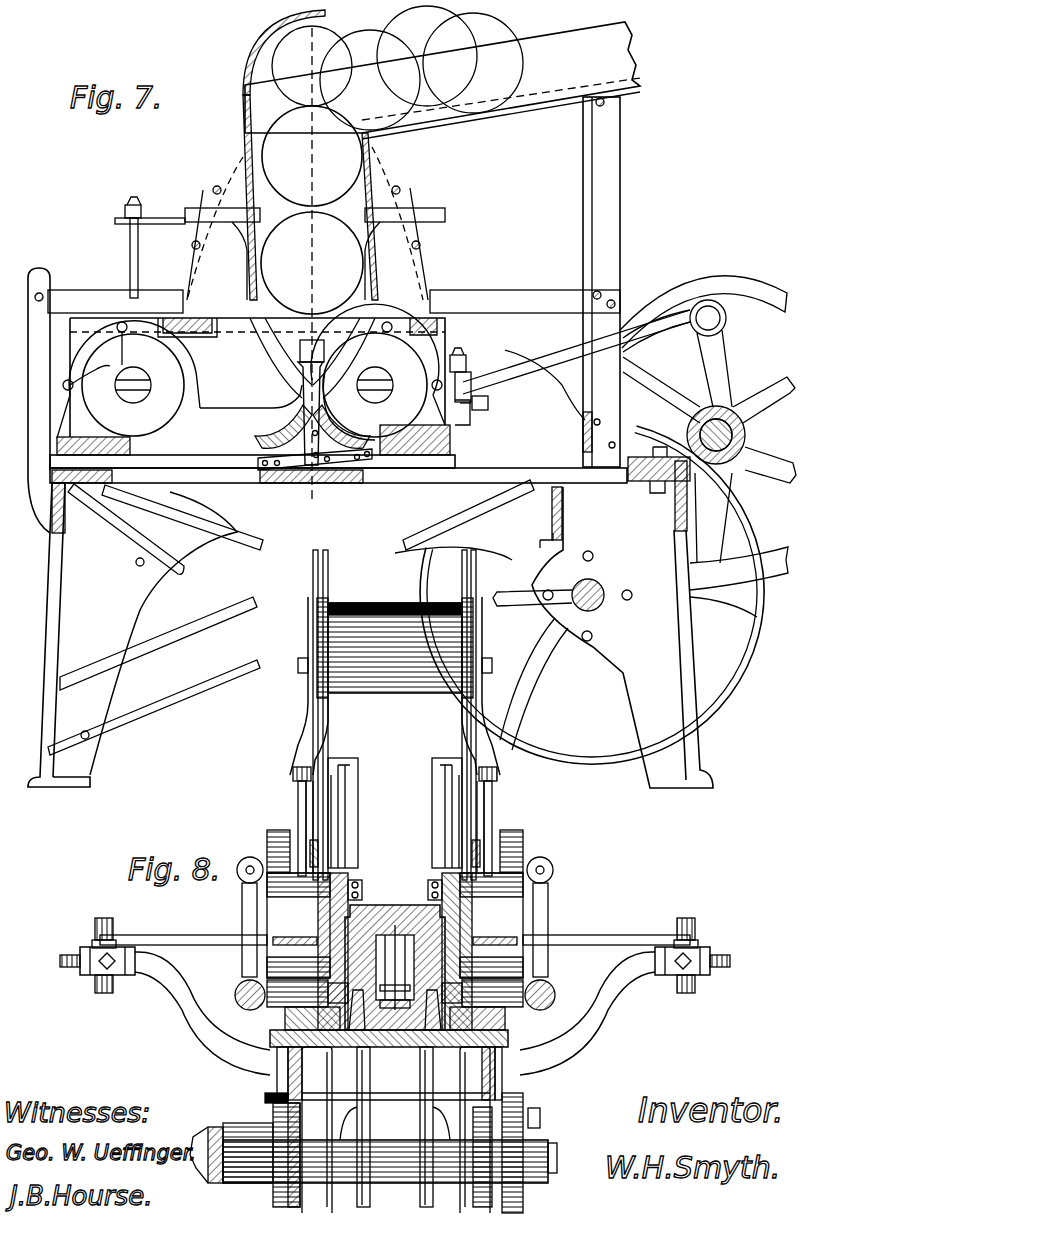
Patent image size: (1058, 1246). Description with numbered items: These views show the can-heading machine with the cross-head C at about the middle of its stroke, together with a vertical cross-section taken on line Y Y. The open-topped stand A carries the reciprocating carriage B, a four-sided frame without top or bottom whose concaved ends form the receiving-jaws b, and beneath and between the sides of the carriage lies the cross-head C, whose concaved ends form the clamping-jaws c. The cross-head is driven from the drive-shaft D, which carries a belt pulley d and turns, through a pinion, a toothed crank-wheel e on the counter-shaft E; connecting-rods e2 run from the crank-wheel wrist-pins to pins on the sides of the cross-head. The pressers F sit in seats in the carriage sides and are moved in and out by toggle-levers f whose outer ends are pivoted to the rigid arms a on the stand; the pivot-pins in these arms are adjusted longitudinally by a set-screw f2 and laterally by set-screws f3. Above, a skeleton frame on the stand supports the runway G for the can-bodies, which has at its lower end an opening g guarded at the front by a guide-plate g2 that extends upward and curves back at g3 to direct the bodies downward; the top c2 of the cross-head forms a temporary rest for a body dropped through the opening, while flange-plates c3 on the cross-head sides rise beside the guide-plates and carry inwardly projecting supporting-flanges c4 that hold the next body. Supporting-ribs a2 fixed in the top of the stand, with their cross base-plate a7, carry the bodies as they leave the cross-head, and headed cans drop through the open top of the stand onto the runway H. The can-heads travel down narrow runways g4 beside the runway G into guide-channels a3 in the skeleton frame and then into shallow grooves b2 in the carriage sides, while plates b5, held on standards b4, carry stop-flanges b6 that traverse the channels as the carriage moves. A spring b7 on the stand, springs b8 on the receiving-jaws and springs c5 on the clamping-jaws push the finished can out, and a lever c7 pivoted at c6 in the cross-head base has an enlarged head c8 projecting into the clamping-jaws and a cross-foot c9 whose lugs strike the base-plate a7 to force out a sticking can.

In FIG. 7, the stand A is at (184, 480).
In FIG. 8, the stand A is at (389, 1130).
In FIG. 7, the rigid arms a is at (458, 430).
In FIG. 8, the rigid arms a is at (620, 1026).
In FIG. 7, the supporting ribs a2 is at (258, 456).
In FIG. 8, the supporting ribs a2 is at (389, 1018).
In FIG. 8, the guide-channels a3 is at (313, 799).
In FIG. 7, the cross base-plate a7 is at (336, 478).
In FIG. 8, the cross base-plate a7 is at (396, 1071).
In FIG. 7, the carriage B is at (257, 377).
In FIG. 8, the carriage B is at (492, 920).
In FIG. 7, the receiving-jaws b is at (85, 420).
In FIG. 7, the shallow grooves b2 is at (203, 336).
In FIG. 8, the shallow grooves b2 is at (312, 872).
In FIG. 7, the standards b4 is at (130, 265).
In FIG. 8, the standards b4 is at (298, 819).
In FIG. 7, the plates b5 is at (162, 224).
In FIG. 7, the stop-flanges b6 is at (122, 222).
In FIG. 8, the stop-flanges b6 is at (293, 774).
In FIG. 7, the spring b7 is at (327, 376).
In FIG. 7, the springs b8 is at (123, 331).
In FIG. 8, the springs b8 is at (366, 888).
In FIG. 8, the cross-head C is at (405, 935).
In FIG. 7, the clamping-jaws c is at (305, 386).
In FIG. 8, the cross-head top c2 is at (322, 870).
In FIG. 7, the flange-plates c3 is at (307, 259).
In FIG. 8, the flange-plates c3 is at (395, 821).
In FIG. 7, the supporting-flanges c4 is at (205, 208).
In FIG. 8, the supporting-flanges c4 is at (395, 813).
In FIG. 7, the springs c5 is at (312, 358).
In FIG. 7, the pivot point c6 is at (330, 430).
In FIG. 7, the lever c7 is at (300, 420).
In FIG. 8, the lever c7 is at (398, 975).
In FIG. 7, the enlarged head c8 is at (305, 375).
In FIG. 7, the cross-foot c9 is at (305, 445).
In FIG. 7, the drive-shaft D is at (597, 590).
In FIG. 8, the drive-shaft D is at (385, 1143).
In FIG. 7, the belt pulley d is at (722, 706).
In FIG. 7, the counter-shaft E is at (728, 412).
In FIG. 7, the toothed crank-wheel e is at (739, 531).
In FIG. 8, the toothed crank-wheel e is at (520, 1028).
In FIG. 7, the connecting-rods e2 is at (518, 384).
In FIG. 8, the connecting-rods e2 is at (243, 910).
In FIG. 7, the pressers F is at (254, 385).
In FIG. 7, the toggle-levers f is at (147, 388).
In FIG. 8, the toggle-levers f is at (162, 942).
In FIG. 8, the set-screw f2 is at (62, 958).
In FIG. 7, the set-screws f3 is at (481, 410).
In FIG. 8, the set-screws f3 is at (100, 965).
In FIG. 7, the runway G is at (536, 50).
In FIG. 8, the runway G is at (378, 612).
In FIG. 7, the opening g is at (392, 160).
In FIG. 7, the front guide-plate g2 is at (238, 175).
In FIG. 7, the curved guide portion g3 is at (260, 44).
In FIG. 8, the narrow runways g4 is at (328, 574).
In FIG. 7, the runway H is at (152, 514).
In FIG. 7, the section line Y Y is at (309, 266).